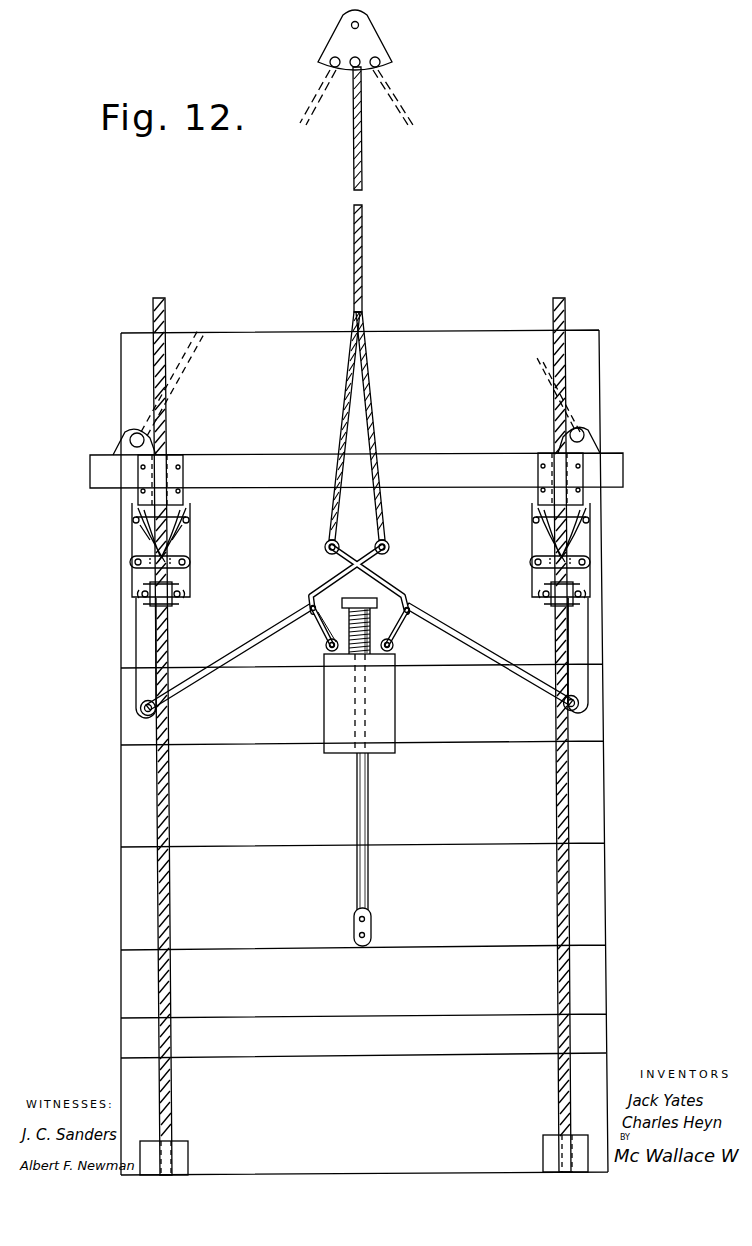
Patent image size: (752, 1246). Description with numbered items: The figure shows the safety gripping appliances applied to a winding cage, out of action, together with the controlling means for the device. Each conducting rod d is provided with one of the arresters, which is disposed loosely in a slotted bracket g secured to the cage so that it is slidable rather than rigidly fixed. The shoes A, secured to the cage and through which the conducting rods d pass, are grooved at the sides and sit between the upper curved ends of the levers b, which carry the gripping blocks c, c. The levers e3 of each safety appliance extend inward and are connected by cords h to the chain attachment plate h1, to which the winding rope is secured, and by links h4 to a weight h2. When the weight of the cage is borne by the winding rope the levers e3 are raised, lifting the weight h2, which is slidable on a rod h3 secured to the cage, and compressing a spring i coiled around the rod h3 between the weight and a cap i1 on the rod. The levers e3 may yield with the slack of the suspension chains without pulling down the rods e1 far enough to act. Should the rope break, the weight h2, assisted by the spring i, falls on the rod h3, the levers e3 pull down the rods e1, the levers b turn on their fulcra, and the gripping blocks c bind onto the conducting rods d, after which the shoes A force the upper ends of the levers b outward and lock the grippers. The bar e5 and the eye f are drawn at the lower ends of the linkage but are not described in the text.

The chain attachment plate h1 is at (375, 45).
The cords h is at (343, 407).
The conducting rod d is at (160, 312).
The shoes A is at (174, 457).
The slotted brackets g is at (190, 537).
The levers b is at (137, 522).
The gripping blocks c is at (179, 600).
The rods e1 is at (625, 676).
The levers e3 is at (484, 660).
The guide bar extension e5 is at (576, 620).
The pivot eye f is at (160, 711).
The links h4 is at (402, 640).
The cap i1 is at (364, 593).
The spring i is at (343, 633).
The weight h2 is at (382, 710).
The rod h3 is at (370, 810).